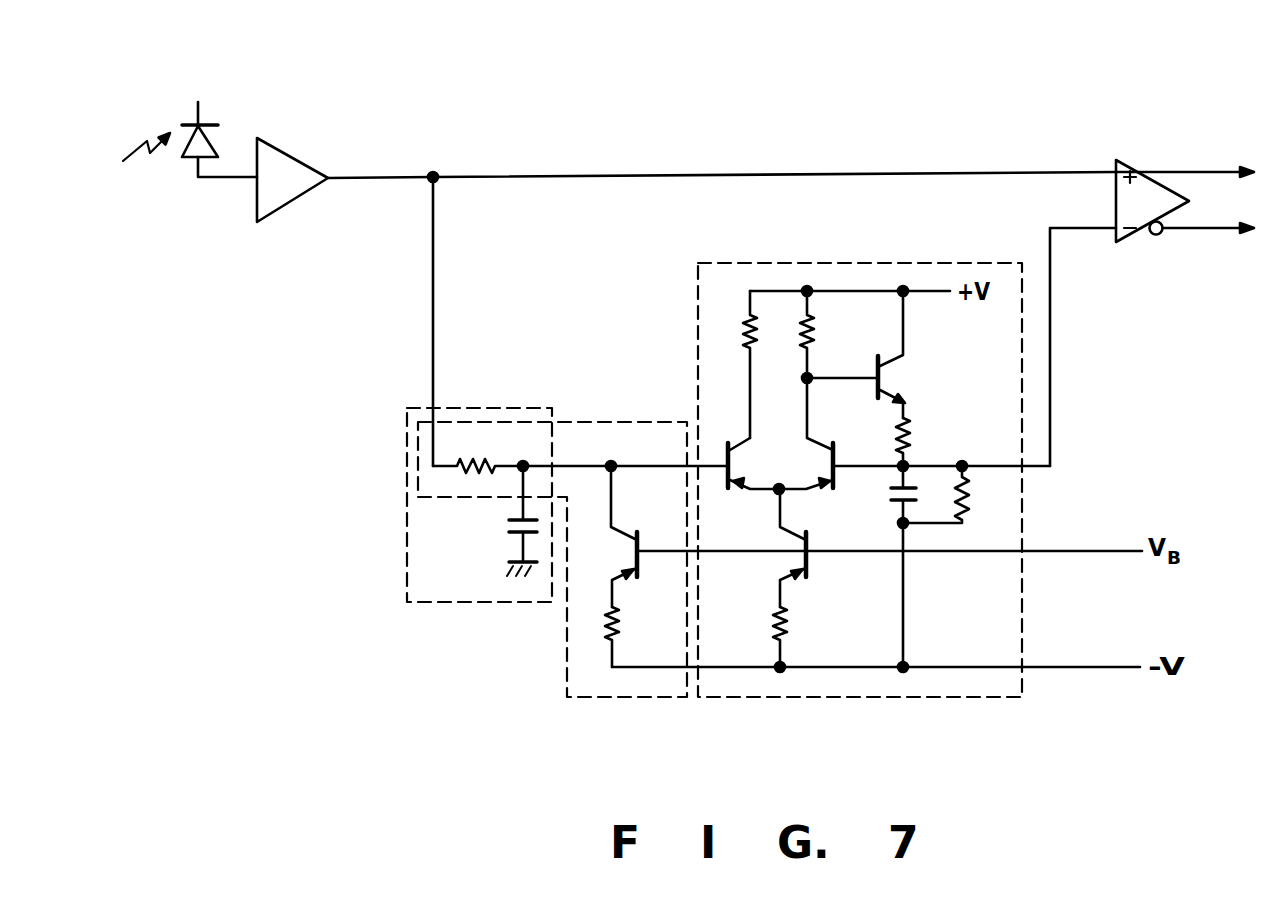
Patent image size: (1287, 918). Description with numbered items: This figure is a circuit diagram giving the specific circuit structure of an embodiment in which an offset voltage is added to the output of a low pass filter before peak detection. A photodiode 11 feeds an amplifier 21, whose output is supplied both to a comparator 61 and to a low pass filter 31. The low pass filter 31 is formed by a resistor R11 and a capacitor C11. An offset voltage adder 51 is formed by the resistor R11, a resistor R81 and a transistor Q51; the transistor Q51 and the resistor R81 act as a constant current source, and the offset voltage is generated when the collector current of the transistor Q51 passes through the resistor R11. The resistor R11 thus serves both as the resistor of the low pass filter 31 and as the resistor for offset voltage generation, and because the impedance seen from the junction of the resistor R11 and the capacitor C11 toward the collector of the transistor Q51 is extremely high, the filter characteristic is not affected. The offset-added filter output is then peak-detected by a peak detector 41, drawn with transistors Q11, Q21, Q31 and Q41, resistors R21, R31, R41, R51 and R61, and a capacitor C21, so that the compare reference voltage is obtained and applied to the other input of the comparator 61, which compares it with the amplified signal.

The photodiode 11 is at (206, 124).
The amplifier 21 is at (302, 157).
The low pass filter 31 is at (407, 586).
The peak detector 41 is at (777, 698).
The offset voltage adder 51 is at (645, 698).
The comparator 61 is at (1130, 164).
The resistor R11 is at (477, 464).
The capacitor C11 is at (500, 533).
The transistor Q51 is at (626, 534).
The resistor R81 is at (620, 626).
The transistor Q11 is at (740, 444).
The transistor Q21 is at (822, 446).
The resistor R21 is at (746, 328).
The resistor R31 is at (811, 337).
The transistor Q41 is at (892, 396).
The resistor R51 is at (911, 432).
The capacitor C21 is at (892, 492).
The resistor R61 is at (963, 490).
The transistor Q31 is at (808, 570).
The resistor R41 is at (783, 626).